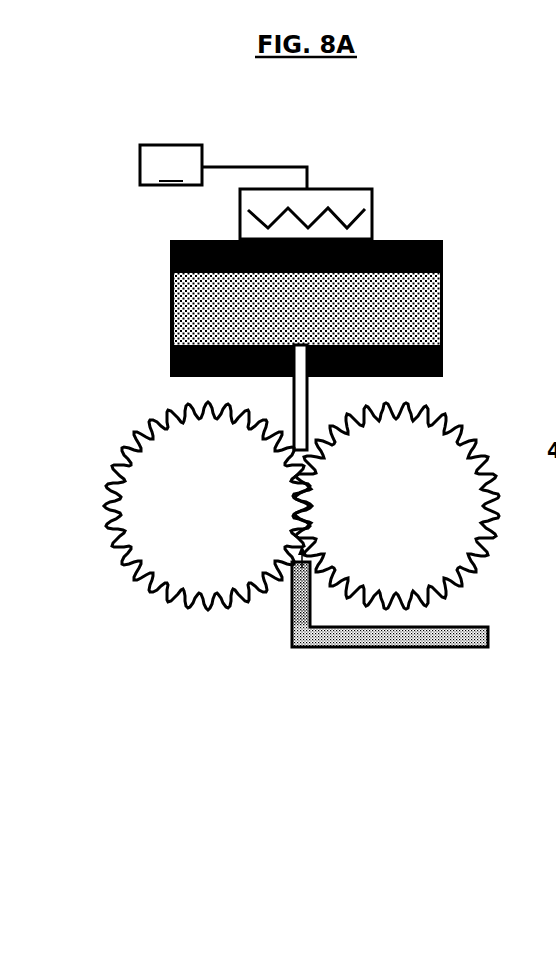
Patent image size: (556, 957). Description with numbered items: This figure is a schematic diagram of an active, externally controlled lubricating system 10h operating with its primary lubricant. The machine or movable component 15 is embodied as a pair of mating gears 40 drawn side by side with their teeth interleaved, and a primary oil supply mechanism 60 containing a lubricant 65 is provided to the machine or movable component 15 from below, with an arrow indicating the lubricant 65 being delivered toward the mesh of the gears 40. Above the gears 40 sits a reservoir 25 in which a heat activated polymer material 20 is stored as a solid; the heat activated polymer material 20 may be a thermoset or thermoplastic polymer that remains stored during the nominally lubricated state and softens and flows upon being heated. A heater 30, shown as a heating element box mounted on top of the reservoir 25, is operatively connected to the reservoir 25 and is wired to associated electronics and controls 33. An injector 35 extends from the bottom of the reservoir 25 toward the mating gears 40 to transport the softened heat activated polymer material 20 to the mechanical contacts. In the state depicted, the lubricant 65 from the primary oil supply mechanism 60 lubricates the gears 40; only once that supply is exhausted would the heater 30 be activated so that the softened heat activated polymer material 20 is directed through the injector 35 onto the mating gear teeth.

The lubricating system 10h is at (100, 263).
The machine or movable component 15 is at (154, 403).
The heat activated polymer material 20 is at (178, 316).
The reservoir 25 is at (450, 258).
The heater 30 is at (373, 215).
The electronics and controls 33 is at (223, 167).
The injector 35 is at (308, 403).
The gear 40 is at (167, 502).
The primary oil supply mechanism 60 is at (425, 647).
The lubricant 65 is at (353, 640).